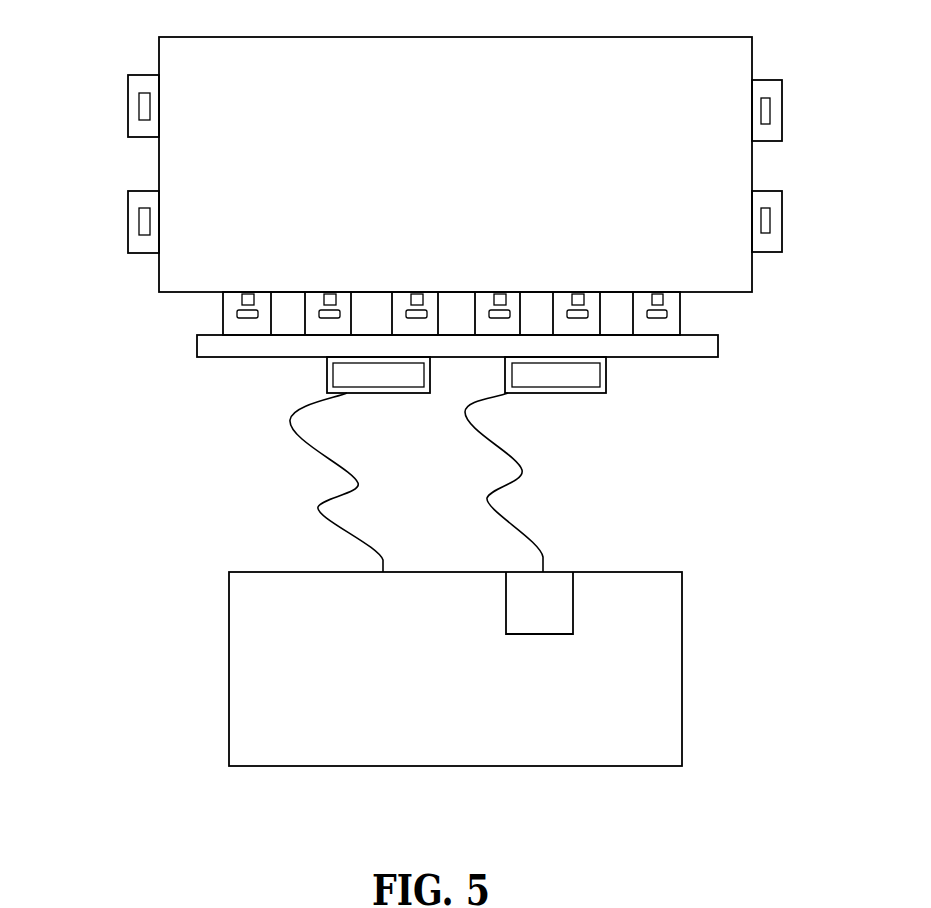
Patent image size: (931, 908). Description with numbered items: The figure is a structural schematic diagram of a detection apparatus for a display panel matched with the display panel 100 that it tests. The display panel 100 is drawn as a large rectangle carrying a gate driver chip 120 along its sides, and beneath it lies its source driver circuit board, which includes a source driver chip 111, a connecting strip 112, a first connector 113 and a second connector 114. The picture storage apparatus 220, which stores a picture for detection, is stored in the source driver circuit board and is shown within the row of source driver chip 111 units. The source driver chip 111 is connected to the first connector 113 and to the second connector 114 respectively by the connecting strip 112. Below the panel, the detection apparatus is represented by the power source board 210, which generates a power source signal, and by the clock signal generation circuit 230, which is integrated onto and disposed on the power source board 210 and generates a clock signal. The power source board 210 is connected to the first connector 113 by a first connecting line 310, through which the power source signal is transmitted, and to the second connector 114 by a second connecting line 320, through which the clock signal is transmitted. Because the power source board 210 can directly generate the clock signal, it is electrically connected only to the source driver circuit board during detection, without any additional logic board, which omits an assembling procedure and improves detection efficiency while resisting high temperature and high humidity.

The display panel 100 is at (159, 163).
The gate driver chip 120 is at (148, 75).
The source driver chip 111 is at (237, 314).
The connecting strip 112 is at (197, 348).
The first connector 113 is at (327, 385).
The second connector 114 is at (606, 376).
The power source board 210 is at (229, 667).
The picture storage apparatus 220 is at (664, 300).
The clock signal generation circuit 230 is at (558, 572).
The first connecting line 310 is at (318, 507).
The second connecting line 320 is at (522, 470).